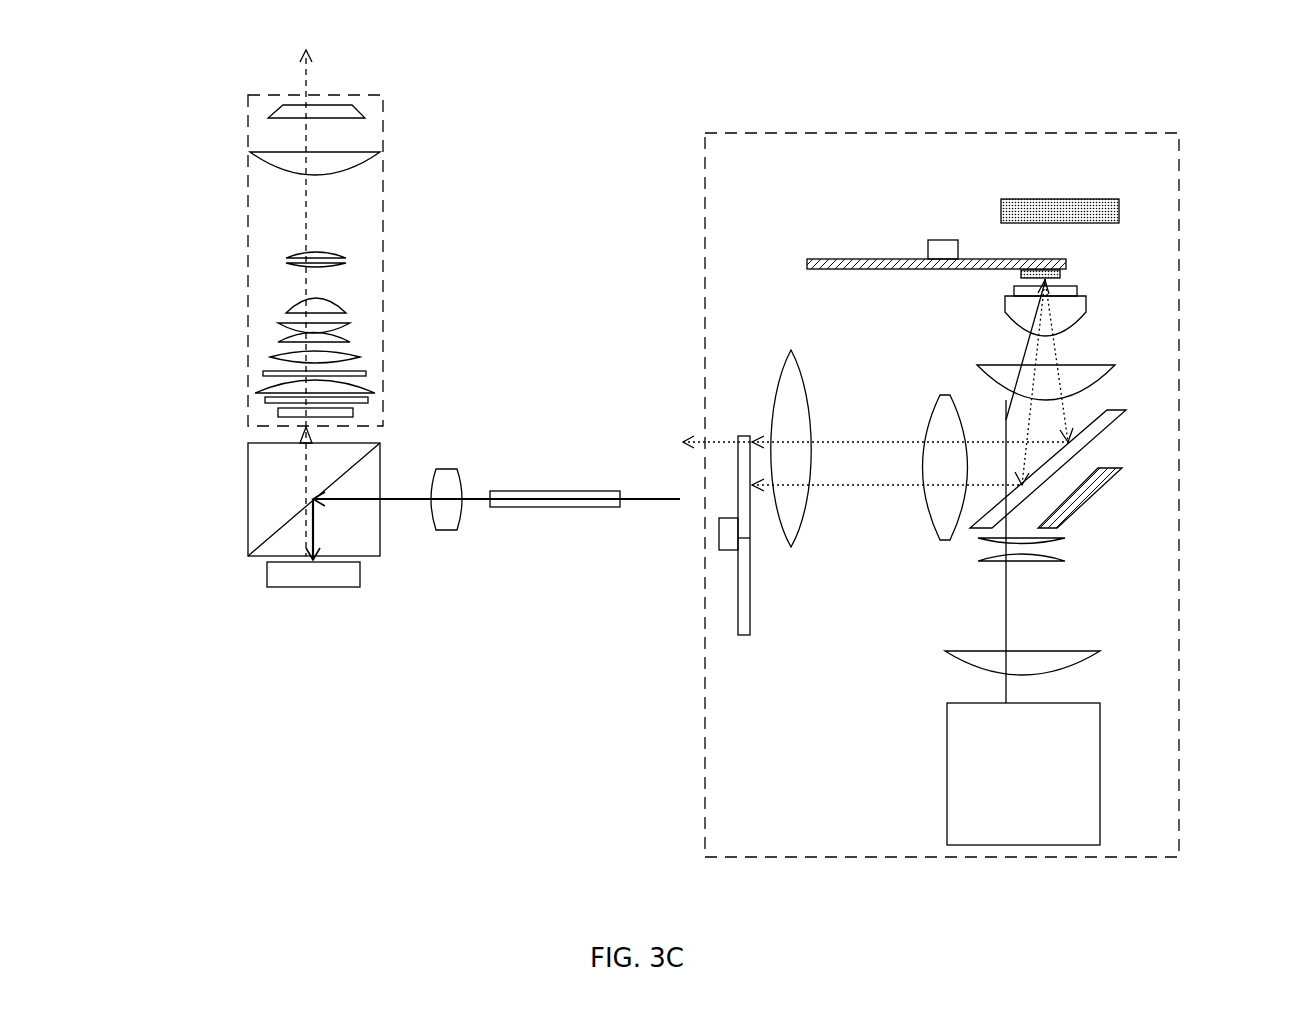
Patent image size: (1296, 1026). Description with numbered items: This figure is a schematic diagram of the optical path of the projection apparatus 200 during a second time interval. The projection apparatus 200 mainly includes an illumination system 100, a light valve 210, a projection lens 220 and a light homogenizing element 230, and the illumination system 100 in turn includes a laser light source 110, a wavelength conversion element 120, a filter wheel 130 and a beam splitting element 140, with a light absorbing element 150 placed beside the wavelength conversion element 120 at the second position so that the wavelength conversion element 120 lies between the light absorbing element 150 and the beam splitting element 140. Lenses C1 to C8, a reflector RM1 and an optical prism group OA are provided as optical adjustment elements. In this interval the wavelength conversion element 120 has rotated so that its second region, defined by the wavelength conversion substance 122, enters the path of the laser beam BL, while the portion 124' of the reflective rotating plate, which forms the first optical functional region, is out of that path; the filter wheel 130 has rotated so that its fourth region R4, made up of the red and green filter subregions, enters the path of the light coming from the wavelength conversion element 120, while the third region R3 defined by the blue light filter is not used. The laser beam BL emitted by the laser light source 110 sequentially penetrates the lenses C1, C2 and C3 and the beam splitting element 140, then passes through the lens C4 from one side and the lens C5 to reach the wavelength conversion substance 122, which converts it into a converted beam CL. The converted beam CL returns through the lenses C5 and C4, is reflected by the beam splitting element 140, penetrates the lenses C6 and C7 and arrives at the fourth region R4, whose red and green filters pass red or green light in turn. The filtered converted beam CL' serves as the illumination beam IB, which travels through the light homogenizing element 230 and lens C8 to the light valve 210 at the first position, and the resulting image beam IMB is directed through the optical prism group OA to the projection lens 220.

The illumination system 100 is at (1180, 182).
The laser light source 110 is at (1100, 770).
The wavelength conversion element 120 is at (893, 262).
The wavelength conversion substance 122 is at (1015, 274).
The portion of the reflective rotating plate 124' is at (849, 281).
The filter wheel 130 is at (764, 628).
The beam splitting element 140 is at (1100, 425).
The light absorbing element 150 is at (1001, 212).
The projection apparatus 200 is at (1266, 881).
The light valve 210 is at (275, 576).
The projection lens 220 is at (248, 270).
The light homogenizing element 230 is at (545, 508).
The lens C1 is at (1075, 658).
The lens C2 is at (1045, 558).
The lens C3 is at (1050, 543).
The lens C4 is at (1085, 380).
The lens C5 is at (1080, 322).
The lens C6 is at (935, 508).
The lens C7 is at (795, 527).
The lens C8 is at (448, 523).
The converted beam CL is at (999, 401).
The filtered converted beam CL' is at (694, 419).
The laser beam BL is at (1010, 600).
The illumination beam IB is at (650, 508).
The image beam IMB is at (300, 70).
The optical prism group OA is at (298, 543).
The third region R3 is at (738, 613).
The fourth region R4 is at (738, 488).
The reflector RM1 is at (1100, 492).